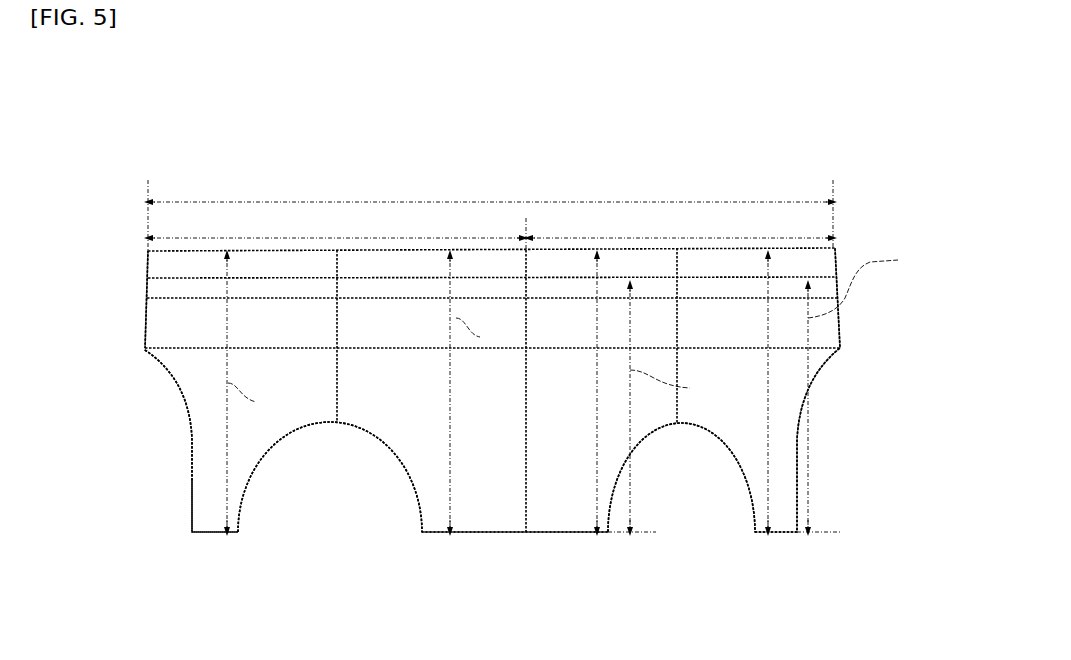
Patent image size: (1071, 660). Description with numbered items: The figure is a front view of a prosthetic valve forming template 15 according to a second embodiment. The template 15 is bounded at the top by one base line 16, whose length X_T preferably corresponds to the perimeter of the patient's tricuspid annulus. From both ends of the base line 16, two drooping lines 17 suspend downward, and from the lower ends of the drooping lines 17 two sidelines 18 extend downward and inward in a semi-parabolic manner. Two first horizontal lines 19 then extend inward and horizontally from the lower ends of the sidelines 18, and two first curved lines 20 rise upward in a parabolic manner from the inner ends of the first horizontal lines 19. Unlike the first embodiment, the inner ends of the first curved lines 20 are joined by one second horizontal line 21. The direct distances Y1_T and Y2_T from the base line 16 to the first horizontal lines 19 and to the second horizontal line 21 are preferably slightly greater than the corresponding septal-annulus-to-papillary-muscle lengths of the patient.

The prosthetic valve forming template 15 is at (706, 152).
The base line 16 is at (556, 250).
The drooping lines 17 is at (143, 322).
The sidelines 18 is at (191, 462).
The first horizontal lines 19 is at (201, 533).
The first curved lines 20 is at (356, 427).
The second horizontal line 21 is at (500, 534).